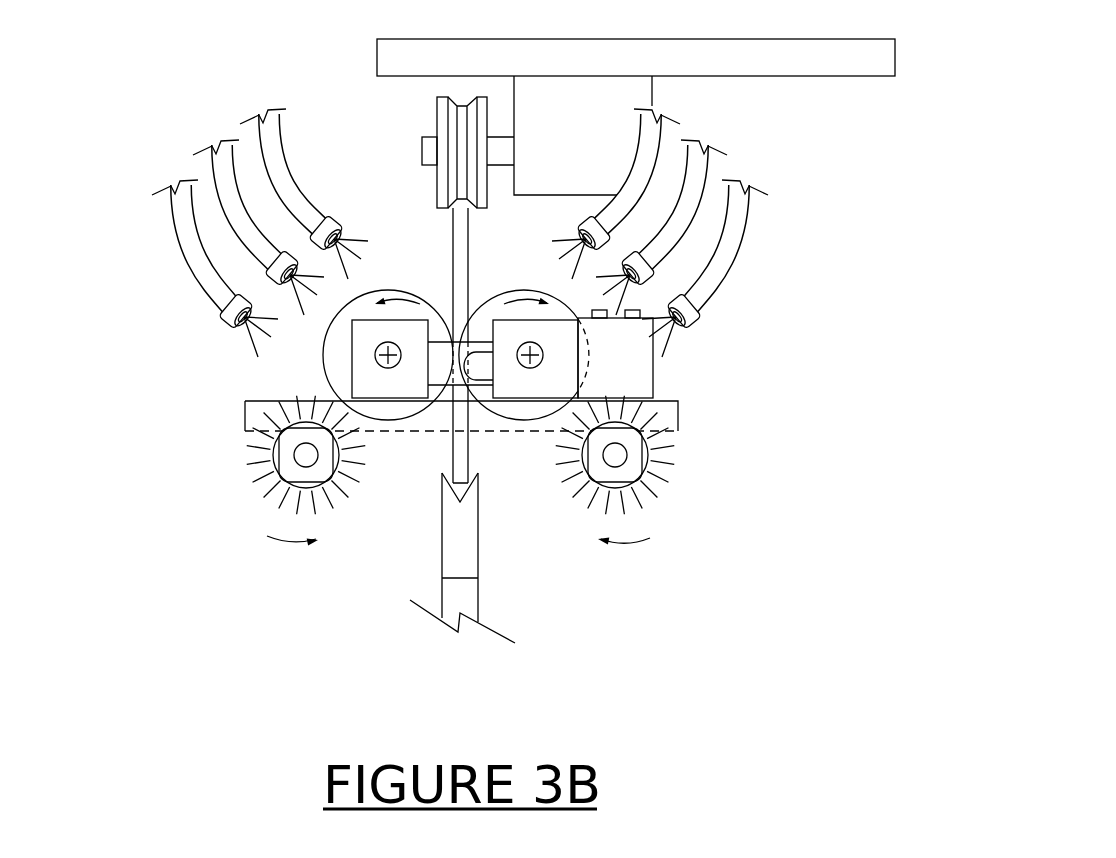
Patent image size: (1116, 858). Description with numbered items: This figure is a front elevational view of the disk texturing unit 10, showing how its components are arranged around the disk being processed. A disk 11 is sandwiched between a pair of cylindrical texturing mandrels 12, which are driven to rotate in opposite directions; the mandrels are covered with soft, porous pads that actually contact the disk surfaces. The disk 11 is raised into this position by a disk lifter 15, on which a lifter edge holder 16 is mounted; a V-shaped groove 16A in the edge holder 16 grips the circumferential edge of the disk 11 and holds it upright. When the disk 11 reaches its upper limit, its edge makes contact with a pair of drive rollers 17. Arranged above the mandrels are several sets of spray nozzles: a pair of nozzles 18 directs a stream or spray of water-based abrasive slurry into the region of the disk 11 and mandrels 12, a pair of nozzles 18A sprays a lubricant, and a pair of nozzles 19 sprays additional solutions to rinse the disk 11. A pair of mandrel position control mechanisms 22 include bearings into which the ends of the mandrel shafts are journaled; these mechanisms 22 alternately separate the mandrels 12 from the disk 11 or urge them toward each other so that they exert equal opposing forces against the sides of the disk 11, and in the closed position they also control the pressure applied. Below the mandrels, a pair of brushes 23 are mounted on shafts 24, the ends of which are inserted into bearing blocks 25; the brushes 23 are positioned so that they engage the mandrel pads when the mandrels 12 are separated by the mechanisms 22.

The disk texturing unit 10 is at (913, 107).
The disk 11 is at (468, 448).
The cylindrical texturing mandrels 12 is at (336, 385).
The disk lifter 15 is at (413, 599).
The lifter edge holder 16 is at (461, 547).
The V-shaped groove 16A is at (462, 503).
The drive rollers 17 is at (432, 122).
The nozzles 18 is at (250, 124).
The nozzles 18A is at (167, 235).
The nozzles 19 is at (210, 162).
The mandrel position control mechanisms 22 is at (655, 375).
The brushes 23 is at (260, 495).
The shafts 24 is at (444, 498).
The bearing blocks 25 is at (243, 442).